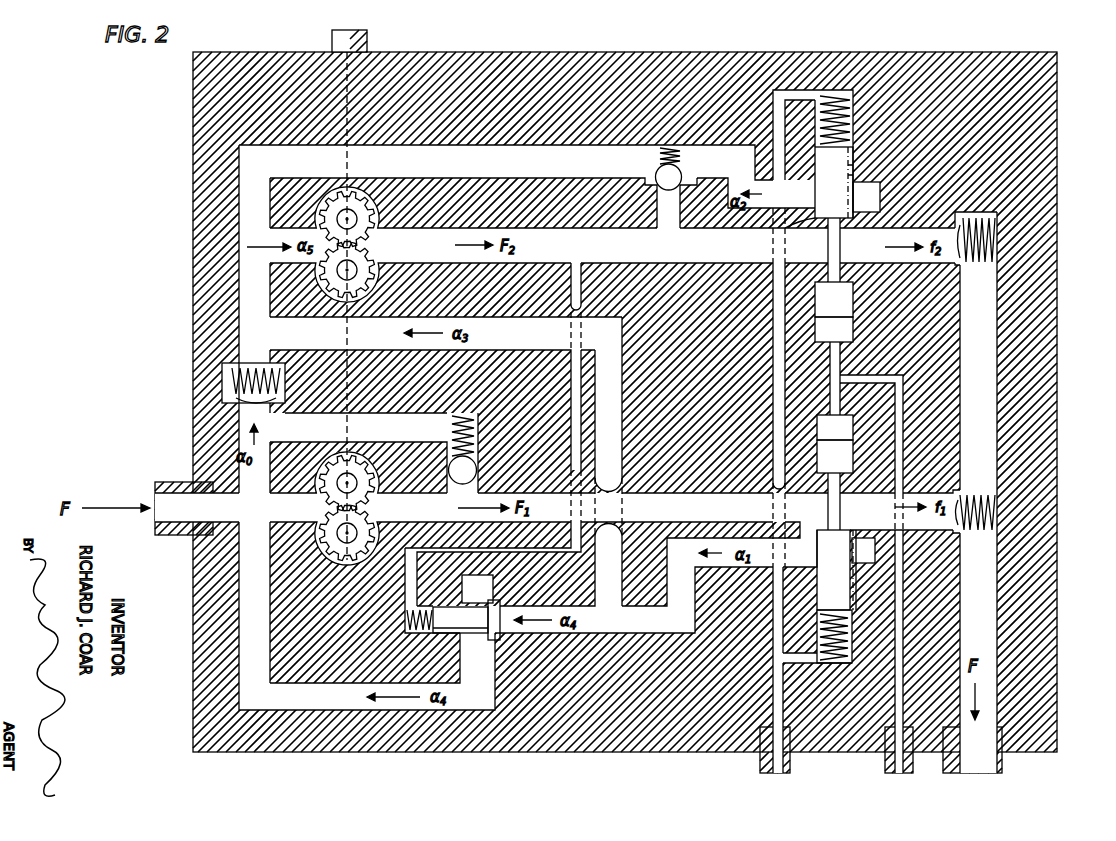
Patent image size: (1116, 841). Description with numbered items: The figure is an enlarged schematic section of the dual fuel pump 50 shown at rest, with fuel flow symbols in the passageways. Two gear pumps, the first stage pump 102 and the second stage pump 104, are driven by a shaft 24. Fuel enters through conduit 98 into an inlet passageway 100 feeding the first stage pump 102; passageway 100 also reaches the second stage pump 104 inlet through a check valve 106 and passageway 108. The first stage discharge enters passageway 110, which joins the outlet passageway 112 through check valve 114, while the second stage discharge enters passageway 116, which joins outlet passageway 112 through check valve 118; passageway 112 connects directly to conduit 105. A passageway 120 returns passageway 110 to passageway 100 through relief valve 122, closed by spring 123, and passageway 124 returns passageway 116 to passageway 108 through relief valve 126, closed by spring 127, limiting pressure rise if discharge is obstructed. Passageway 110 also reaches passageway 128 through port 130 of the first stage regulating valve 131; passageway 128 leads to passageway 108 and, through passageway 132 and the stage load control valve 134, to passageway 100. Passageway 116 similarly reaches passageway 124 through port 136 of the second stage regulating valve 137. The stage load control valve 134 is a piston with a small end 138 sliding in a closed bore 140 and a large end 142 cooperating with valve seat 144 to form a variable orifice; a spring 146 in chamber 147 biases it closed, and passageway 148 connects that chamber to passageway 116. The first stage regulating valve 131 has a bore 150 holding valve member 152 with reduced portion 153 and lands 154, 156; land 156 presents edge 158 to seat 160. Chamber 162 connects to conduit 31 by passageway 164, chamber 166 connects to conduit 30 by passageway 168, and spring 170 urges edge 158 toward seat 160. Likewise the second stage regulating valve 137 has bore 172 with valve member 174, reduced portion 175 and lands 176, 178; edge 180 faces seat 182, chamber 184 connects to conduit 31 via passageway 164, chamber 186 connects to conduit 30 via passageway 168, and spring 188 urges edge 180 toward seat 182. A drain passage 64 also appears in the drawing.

The shaft 24 is at (360, 40).
The dual fuel pump 50 is at (193, 196).
The conduit 98 is at (165, 538).
The inlet passageway 100 is at (215, 472).
The first stage pump 102 is at (335, 505).
The second stage pump 104 is at (368, 250).
The check valve 106 is at (232, 400).
The passageway 108 is at (250, 290).
The passageway 110 is at (645, 500).
The outlet passageway 112 is at (990, 395).
The check valve 114 is at (958, 536).
The passageway 116 is at (477, 235).
The check valve 118 is at (968, 268).
The passageway 120 is at (410, 420).
The relief valve 122 is at (465, 487).
The spring 123 is at (470, 417).
The passageway 124 is at (255, 192).
The relief valve 126 is at (683, 180).
The spring 127 is at (660, 156).
The passageway 128 is at (606, 325).
The port 130 is at (885, 570).
The first stage regulating valve 131 is at (857, 600).
The passageway 132 is at (252, 640).
The stage load control valve 134 is at (477, 640).
The port 136 is at (880, 205).
The second stage regulating valve 137 is at (872, 163).
The small end 138 is at (477, 589).
The closed bore 140 is at (440, 634).
The large end 142 is at (517, 600).
The valve seat 144 is at (503, 628).
The spring 146 is at (405, 618).
The chamber 147 is at (405, 630).
The passageway 148 is at (578, 408).
The bore 150 is at (815, 425).
The valve member 152 is at (823, 506).
The reduced portion 153 is at (842, 507).
The land 154 is at (815, 457).
The land 156 is at (818, 603).
The edge 158 is at (699, 544).
The seat 160 is at (875, 548).
The chamber 162 is at (855, 630).
The passageway 164 is at (773, 98).
The chamber 166 is at (855, 428).
The passageway 168 is at (848, 378).
The spring 170 is at (855, 655).
The bore 172 is at (778, 352).
The valve member 174 is at (826, 237).
The reduced portion 175 is at (842, 249).
The land 176 is at (852, 300).
The land 178 is at (860, 150).
The edge 180 is at (857, 170).
The seat 182 is at (819, 187).
The chamber 184 is at (858, 96).
The chamber 186 is at (852, 330).
The spring 188 is at (830, 94).
The conduit 30 is at (890, 768).
The conduit 31 is at (760, 762).
The drain passage 64 is at (773, 712).
The conduit 105 is at (1002, 770).